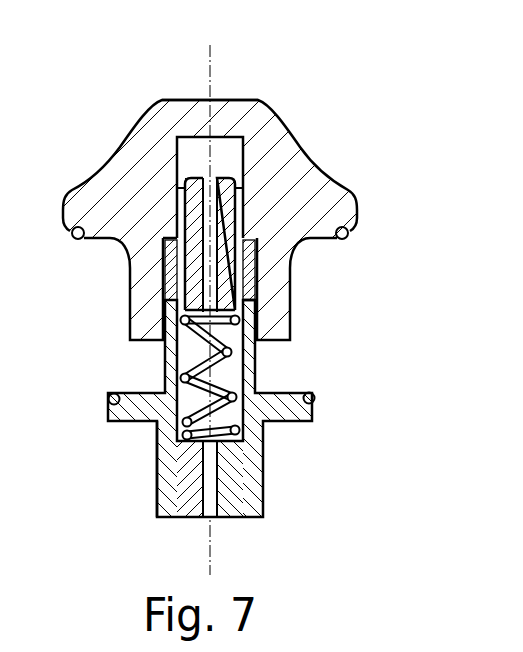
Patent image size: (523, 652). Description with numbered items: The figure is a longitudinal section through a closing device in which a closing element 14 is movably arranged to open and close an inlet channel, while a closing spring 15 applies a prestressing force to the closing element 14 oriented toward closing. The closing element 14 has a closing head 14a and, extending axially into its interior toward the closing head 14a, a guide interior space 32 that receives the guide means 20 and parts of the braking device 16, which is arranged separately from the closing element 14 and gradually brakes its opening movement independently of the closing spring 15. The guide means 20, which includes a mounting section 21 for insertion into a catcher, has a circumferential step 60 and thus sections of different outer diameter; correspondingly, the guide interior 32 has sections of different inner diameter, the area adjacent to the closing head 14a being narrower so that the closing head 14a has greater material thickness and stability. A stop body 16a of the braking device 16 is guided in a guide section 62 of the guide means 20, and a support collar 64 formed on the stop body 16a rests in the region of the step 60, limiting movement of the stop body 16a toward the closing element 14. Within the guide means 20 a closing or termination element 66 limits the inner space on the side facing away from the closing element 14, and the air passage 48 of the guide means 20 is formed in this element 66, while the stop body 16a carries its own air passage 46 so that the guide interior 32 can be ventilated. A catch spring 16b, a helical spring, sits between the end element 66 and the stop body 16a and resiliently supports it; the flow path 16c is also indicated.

The closing element 14 is at (332, 192).
The closing head 14a is at (263, 99).
The closing spring 15 is at (350, 234).
The braking device 16 is at (226, 146).
The stop body 16a is at (250, 178).
The catch spring 16b is at (180, 363).
The central passage inlet 16c is at (198, 170).
The guide means 20 is at (262, 410).
The mounting section 21 is at (163, 467).
The guide interior space 32 is at (190, 162).
The air passage 46 is at (212, 229).
The air passage 48 is at (208, 475).
The circumferential step 60 is at (165, 284).
The guide section 62 is at (250, 257).
The support collar 64 is at (258, 308).
The closing element 66 is at (226, 498).